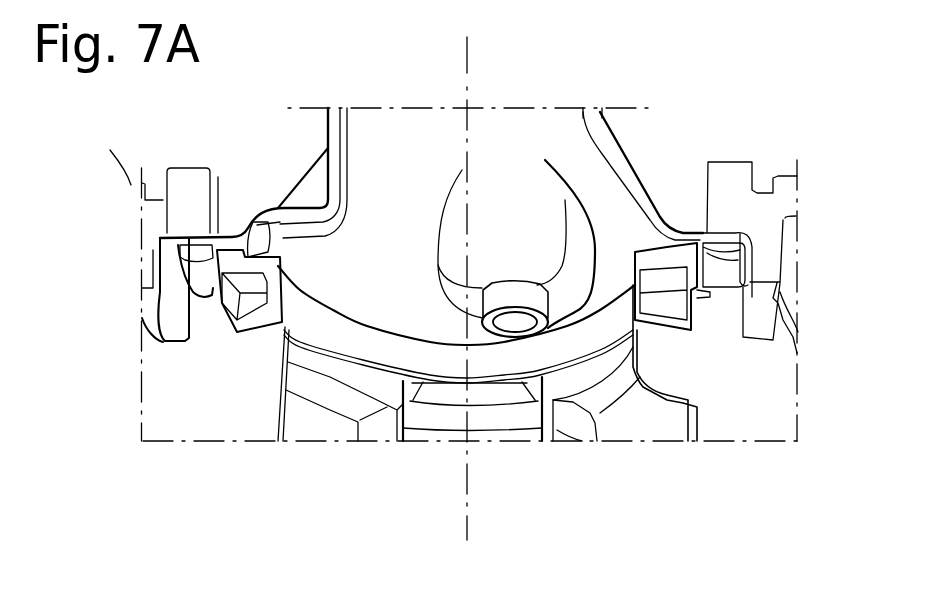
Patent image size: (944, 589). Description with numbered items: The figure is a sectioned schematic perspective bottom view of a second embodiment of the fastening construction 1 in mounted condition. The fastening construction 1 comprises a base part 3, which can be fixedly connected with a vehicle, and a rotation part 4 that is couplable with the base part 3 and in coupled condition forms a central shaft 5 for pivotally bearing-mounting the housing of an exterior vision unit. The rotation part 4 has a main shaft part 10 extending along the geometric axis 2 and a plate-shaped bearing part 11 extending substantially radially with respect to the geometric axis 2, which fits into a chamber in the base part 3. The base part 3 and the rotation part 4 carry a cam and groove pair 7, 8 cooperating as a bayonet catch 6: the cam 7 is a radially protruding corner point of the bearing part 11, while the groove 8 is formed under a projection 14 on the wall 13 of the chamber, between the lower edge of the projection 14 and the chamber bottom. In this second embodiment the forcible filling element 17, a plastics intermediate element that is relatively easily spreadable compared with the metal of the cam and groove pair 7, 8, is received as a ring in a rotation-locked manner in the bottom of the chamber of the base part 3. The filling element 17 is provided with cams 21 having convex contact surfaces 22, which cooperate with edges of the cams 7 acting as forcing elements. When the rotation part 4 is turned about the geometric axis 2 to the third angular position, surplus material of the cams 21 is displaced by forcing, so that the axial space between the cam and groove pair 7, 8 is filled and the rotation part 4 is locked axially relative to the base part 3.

The fastening construction 1 is at (135, 238).
The geometric axis 2 is at (470, 55).
The base part 3 is at (785, 203).
The rotation part 4 is at (283, 219).
The central shaft 5 is at (253, 146).
The main shaft part 10 is at (334, 122).
The bayonet catch 6 is at (230, 200).
The cam 7 is at (189, 238).
The groove 8 is at (160, 238).
The bearing part 11 is at (225, 238).
The wall 13 is at (747, 252).
The projection 14 is at (730, 183).
The forcible filling element 17 is at (328, 328).
The cams 21 is at (693, 365).
The contact surfaces 22 is at (668, 228).